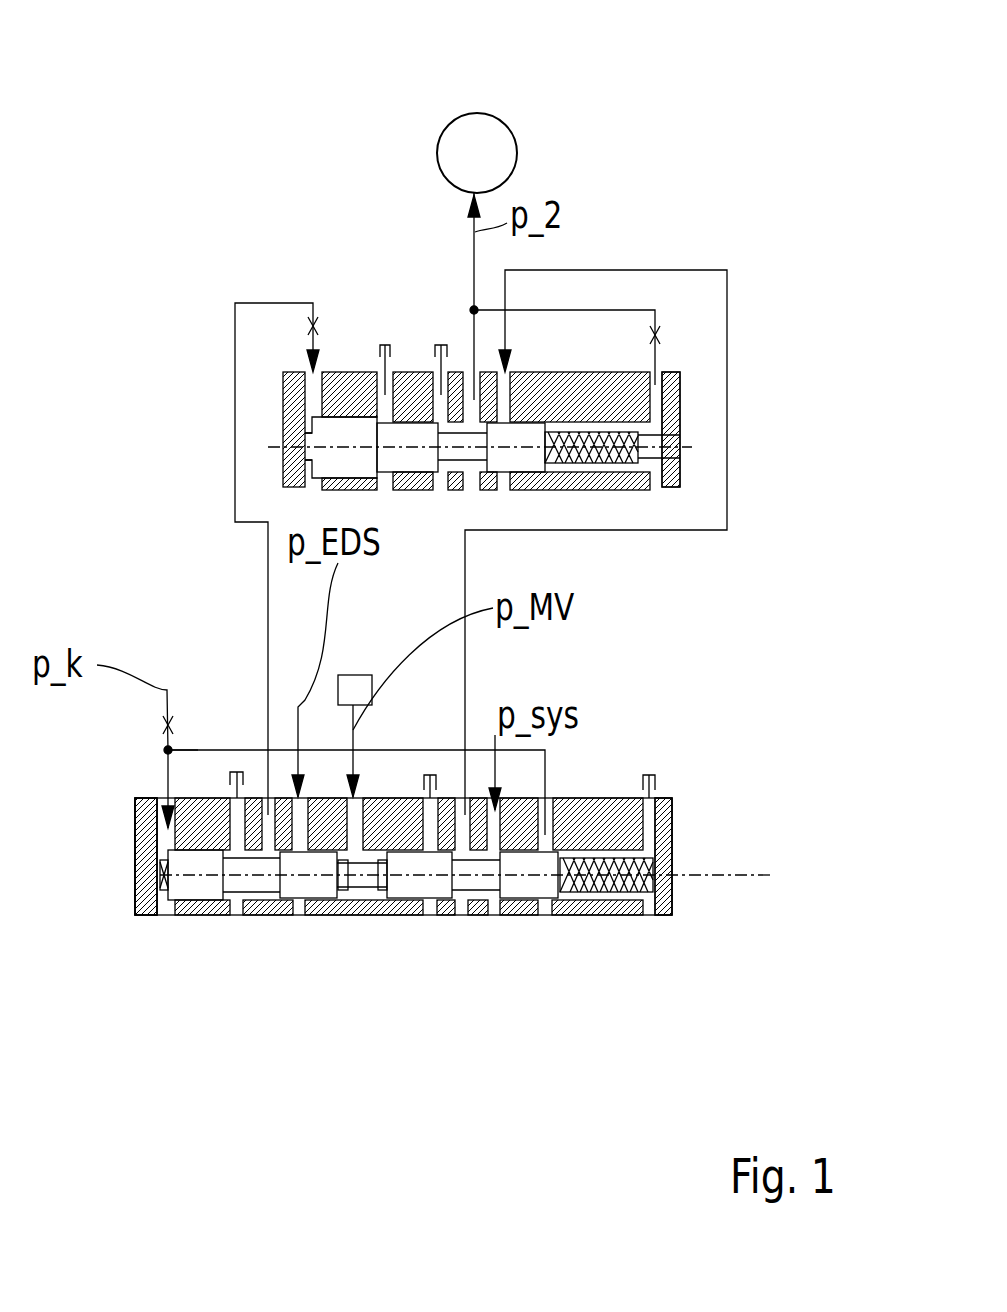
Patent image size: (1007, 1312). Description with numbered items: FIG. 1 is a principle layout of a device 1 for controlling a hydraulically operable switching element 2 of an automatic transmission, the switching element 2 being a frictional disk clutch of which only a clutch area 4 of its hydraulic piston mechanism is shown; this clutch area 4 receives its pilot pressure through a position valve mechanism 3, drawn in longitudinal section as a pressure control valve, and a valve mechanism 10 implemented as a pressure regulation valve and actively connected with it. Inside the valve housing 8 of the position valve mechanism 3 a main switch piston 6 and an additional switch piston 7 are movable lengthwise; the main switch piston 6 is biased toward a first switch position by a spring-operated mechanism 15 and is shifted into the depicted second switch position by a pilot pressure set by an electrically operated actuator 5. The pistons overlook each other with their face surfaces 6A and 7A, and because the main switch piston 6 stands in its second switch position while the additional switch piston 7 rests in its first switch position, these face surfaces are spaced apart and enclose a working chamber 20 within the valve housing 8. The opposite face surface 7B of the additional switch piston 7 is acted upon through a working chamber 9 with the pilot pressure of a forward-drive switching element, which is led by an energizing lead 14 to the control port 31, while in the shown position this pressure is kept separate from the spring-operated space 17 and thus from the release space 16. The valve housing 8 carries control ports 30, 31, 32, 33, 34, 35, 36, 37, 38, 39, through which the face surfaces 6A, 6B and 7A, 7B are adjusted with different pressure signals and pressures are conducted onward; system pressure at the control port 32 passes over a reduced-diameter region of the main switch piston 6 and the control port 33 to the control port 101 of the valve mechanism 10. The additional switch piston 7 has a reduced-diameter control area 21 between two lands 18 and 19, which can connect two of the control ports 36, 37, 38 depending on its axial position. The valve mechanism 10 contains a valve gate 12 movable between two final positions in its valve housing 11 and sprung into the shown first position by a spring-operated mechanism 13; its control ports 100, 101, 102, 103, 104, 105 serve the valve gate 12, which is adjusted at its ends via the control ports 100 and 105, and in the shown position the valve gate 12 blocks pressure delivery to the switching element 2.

The device 1 is at (144, 108).
The switching element 2 is at (522, 153).
The position valve mechanism 3 is at (680, 840).
The clutch area 4 is at (462, 150).
The actuator 5 is at (360, 675).
The main switch piston 6 is at (523, 912).
The face surface of the main switch piston 6A is at (381, 890).
The face surface of the main switch piston 6B is at (590, 912).
The additional switch piston 7 is at (135, 860).
The face surface of the additional switch piston 7A is at (347, 890).
The face surface of the additional switch piston 7B is at (137, 882).
The valve housing of the position valve mechanism 8 is at (148, 835).
The working chamber of the position valve mechanism 9 is at (138, 832).
The valve mechanism 10 is at (688, 460).
The valve housing of valve mechanism 11 is at (283, 402).
The valve gate of valve mechanism 12 is at (312, 463).
The spring-operated mechanism of the valve mechanism 13 is at (660, 443).
The energizing lead 14 is at (198, 750).
The spring-operated mechanism 15 is at (672, 863).
The release space 16 is at (385, 345).
The spring-operated space of the position valve mechanism 17 is at (673, 817).
The land of the additional switch piston 18 is at (137, 903).
The land of the additional switch piston 19 is at (317, 912).
The working chamber 20 is at (357, 888).
The control area 21 is at (253, 912).
The control port of the position valve mechanism 30 is at (670, 903).
The control port of the position valve mechanism 31 is at (543, 912).
The control port of the position valve mechanism 32 is at (492, 912).
The control port of the position valve mechanism 33 is at (460, 912).
The control port of the position valve mechanism 34 is at (432, 912).
The control port of the position valve mechanism 35 is at (357, 817).
The control port of the position valve mechanism 36 is at (297, 912).
The control port of the position valve mechanism 37 is at (268, 815).
The control port of the position valve mechanism 38 is at (235, 912).
The control port of the position valve mechanism 39 is at (165, 912).
The control port of the valve mechanism 100 is at (677, 372).
The control port of the valve mechanism 101 is at (512, 400).
The control port of the valve mechanism 102 is at (503, 393).
The control port of the valve mechanism 103 is at (440, 390).
The control port of the valve mechanism 104 is at (387, 395).
The control port of the valve mechanism 105 is at (308, 388).